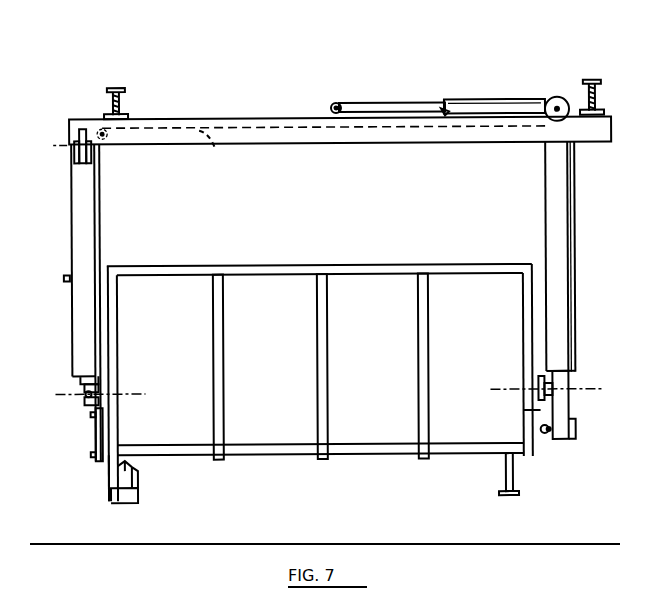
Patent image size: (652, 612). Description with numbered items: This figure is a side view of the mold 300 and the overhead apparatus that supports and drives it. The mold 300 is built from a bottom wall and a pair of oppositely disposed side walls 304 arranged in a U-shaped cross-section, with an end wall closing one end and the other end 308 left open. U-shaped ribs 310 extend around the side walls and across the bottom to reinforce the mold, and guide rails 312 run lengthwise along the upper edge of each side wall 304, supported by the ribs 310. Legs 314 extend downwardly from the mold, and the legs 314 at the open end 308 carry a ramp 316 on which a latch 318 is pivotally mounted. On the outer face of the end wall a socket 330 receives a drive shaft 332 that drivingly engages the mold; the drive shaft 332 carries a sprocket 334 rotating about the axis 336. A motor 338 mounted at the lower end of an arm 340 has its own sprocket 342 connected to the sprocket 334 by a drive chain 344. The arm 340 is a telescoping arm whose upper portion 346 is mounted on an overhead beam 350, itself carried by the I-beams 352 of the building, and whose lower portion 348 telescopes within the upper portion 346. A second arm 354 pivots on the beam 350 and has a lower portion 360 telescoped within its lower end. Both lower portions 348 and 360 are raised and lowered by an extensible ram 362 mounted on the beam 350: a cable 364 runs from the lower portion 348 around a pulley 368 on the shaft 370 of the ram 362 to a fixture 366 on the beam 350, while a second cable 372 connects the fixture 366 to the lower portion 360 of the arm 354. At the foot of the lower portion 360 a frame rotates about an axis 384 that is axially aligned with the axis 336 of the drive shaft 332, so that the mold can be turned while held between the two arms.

The mold 300 is at (520, 478).
The side walls 304 is at (289, 348).
The open end 308 is at (118, 348).
The U-shaped ribs 310 is at (115, 428).
The guide rails 312 is at (178, 265).
The legs 314 is at (113, 472).
The ramp 316 is at (137, 495).
The latch 318 is at (137, 463).
The socket 330 is at (530, 380).
The drive shaft 332 is at (560, 390).
The sprocket 334 is at (560, 372).
The axis 336 is at (585, 390).
The motor 338 is at (546, 437).
The arm 340 is at (560, 300).
The sprocket 342 is at (540, 431).
The drive chain 344 is at (540, 412).
The upper portion 346 is at (548, 230).
The lower portion 348 is at (565, 430).
The overhead beam 350 is at (294, 138).
The I-beams 352 is at (118, 87).
The second arm 354 is at (72, 231).
The lower portion 360 is at (84, 383).
The extensible ram 362 is at (485, 103).
The cable 364 is at (577, 246).
The fixture 366 is at (441, 115).
The pulley 368 is at (332, 108).
The shaft 370 is at (391, 103).
The cable 372 is at (226, 150).
The axis 384 is at (72, 398).